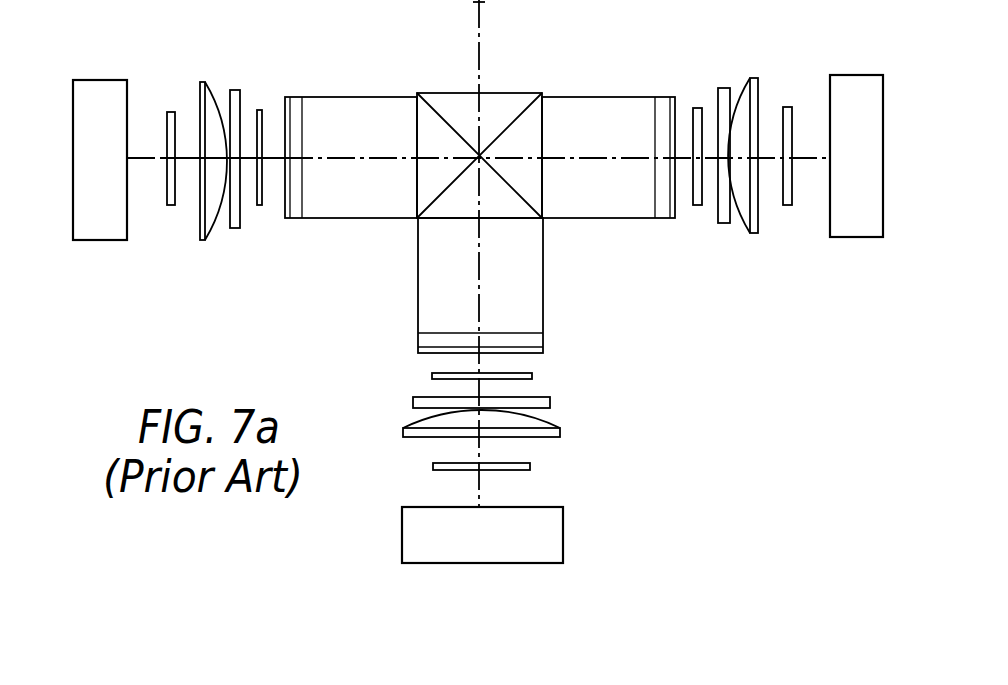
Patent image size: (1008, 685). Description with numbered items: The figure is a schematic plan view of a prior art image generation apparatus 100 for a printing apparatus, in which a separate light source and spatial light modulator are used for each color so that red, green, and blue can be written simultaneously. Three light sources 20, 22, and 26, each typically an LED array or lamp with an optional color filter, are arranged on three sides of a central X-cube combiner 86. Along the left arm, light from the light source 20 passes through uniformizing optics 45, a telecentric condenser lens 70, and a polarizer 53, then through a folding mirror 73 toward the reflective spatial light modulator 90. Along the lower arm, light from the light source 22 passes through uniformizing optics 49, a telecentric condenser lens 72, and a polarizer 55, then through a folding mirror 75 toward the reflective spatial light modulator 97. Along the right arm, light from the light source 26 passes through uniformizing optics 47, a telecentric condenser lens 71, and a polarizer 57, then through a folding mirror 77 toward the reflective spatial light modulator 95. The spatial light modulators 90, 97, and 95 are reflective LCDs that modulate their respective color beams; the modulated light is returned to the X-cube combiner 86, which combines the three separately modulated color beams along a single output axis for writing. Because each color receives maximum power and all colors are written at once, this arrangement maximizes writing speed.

The light source 20 is at (97, 80).
The uniformizing optics 45 is at (170, 112).
The telecentric condenser lens 70 is at (202, 240).
The polarizer 53 is at (235, 90).
The reflective spatial light modulator 90 is at (260, 205).
The folding mirror 73 is at (348, 103).
The X-cube combiner 86 is at (512, 97).
The folding mirror 77 is at (600, 103).
The folding mirror 75 is at (528, 268).
The reflective spatial light modulator 95 is at (697, 205).
The polarizer 57 is at (724, 88).
The telecentric condenser lens 71 is at (752, 233).
The uniformizing optics 47 is at (788, 107).
The light source 26 is at (862, 80).
The reflective spatial light modulator 97 is at (432, 376).
The polarizer 55 is at (550, 402).
The telecentric condenser lens 72 is at (403, 432).
The uniformizing optics 49 is at (530, 466).
The light source 22 is at (557, 530).
The image generation apparatus 100 is at (687, 393).